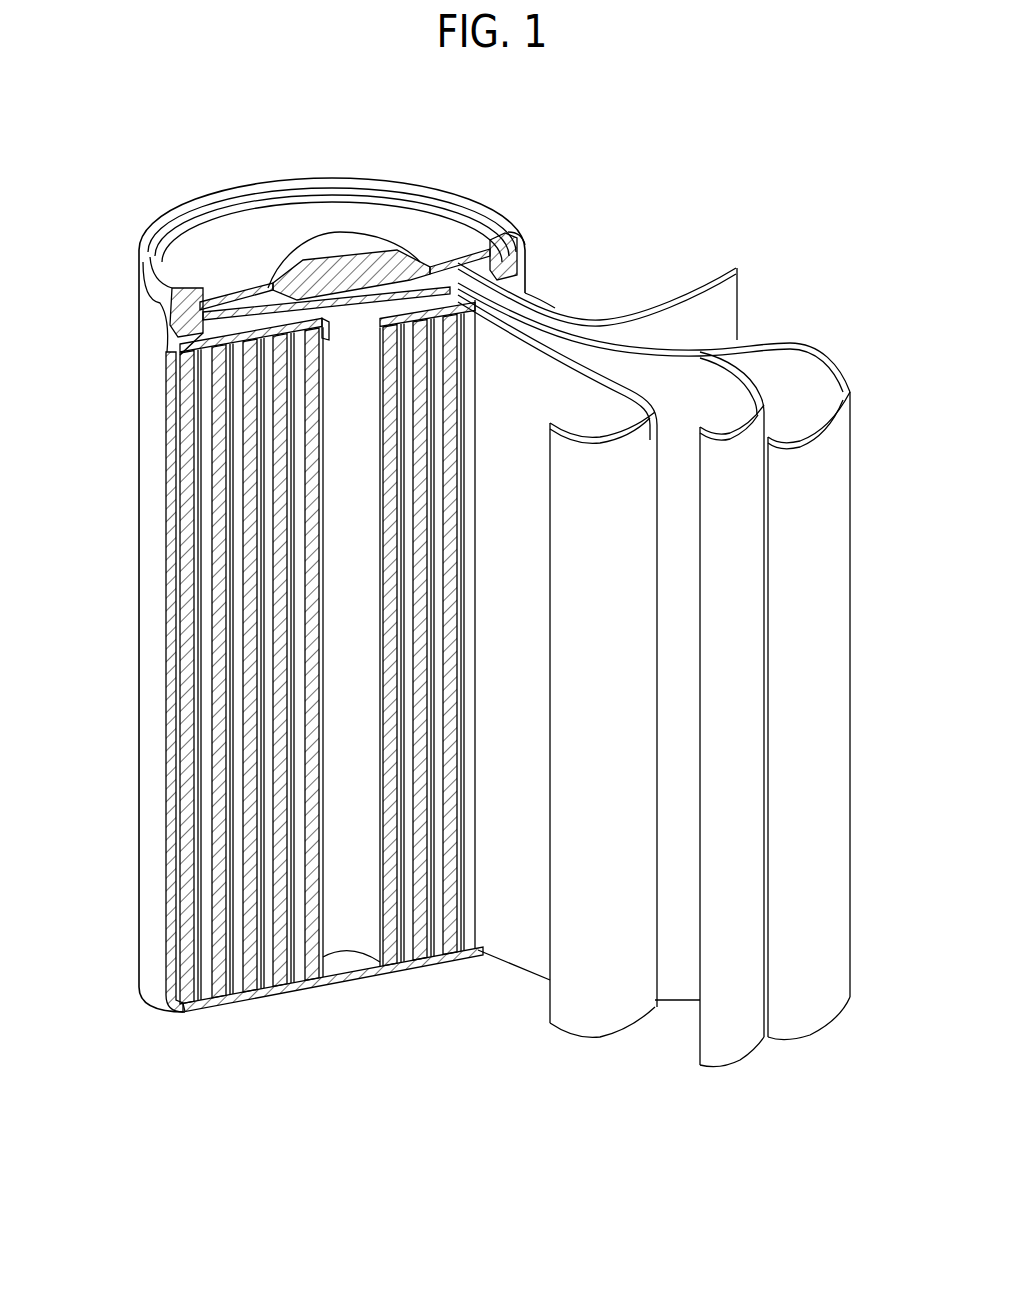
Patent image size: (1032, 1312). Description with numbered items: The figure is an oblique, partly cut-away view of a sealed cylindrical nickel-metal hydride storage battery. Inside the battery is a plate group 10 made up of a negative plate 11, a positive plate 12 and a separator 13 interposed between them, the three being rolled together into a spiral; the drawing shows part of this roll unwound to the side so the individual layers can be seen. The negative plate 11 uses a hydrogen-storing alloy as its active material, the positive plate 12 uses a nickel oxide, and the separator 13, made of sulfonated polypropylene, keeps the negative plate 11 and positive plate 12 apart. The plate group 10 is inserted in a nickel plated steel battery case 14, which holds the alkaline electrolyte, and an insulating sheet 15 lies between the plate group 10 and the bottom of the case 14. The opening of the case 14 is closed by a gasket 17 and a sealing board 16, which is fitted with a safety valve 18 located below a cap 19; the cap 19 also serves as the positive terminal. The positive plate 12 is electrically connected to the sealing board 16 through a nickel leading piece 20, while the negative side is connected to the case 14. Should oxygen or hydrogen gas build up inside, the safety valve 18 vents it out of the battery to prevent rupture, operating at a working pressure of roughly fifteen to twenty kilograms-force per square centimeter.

The plate group 10 is at (838, 357).
The negative plate 11 is at (822, 550).
The positive plate 12 is at (560, 995).
The separator 13 is at (733, 728).
The battery case 14 is at (150, 768).
The insulating sheet 15 is at (312, 981).
The sealing board 16 is at (460, 262).
The gasket 17 is at (170, 300).
The safety valve 18 is at (360, 272).
The cap 19 is at (300, 252).
The nickel leading piece 20 is at (172, 358).